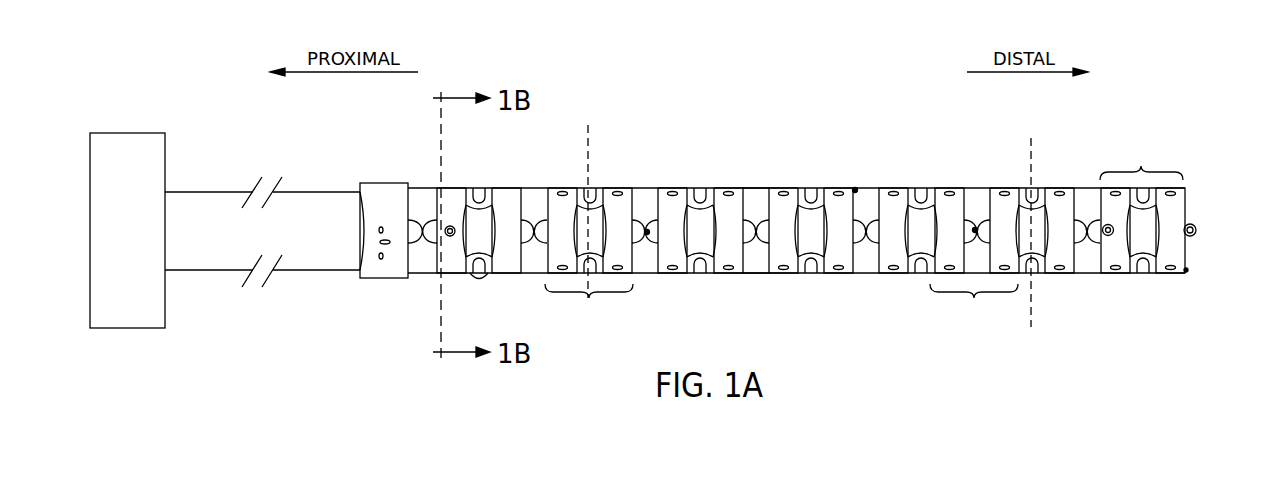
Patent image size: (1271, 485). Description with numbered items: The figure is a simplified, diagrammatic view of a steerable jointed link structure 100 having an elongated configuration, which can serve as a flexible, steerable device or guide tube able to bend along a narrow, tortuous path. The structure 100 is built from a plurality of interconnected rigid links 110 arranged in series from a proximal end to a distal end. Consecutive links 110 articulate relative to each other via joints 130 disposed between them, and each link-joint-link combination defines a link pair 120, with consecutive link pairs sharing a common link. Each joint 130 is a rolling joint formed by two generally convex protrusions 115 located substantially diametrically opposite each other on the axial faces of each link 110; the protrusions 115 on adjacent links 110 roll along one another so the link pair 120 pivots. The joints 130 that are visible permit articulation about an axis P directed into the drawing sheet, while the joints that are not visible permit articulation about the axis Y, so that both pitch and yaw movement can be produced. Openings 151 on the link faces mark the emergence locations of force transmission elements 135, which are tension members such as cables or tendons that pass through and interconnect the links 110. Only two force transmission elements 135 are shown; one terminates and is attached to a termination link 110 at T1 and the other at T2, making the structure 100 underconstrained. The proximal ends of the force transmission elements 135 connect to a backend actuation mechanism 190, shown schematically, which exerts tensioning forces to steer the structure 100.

The jointed link structure 100 is at (744, 99).
The rigid link 110 is at (500, 187).
The convex protrusion 115 is at (697, 185).
The link pair 120 is at (864, 233).
The joint 130 is at (478, 187).
The force transmission element 135 is at (298, 190).
The opening 151 is at (747, 187).
The backend actuation mechanism 190 is at (124, 133).
The axis P is at (647, 230).
The termination T1 is at (855, 188).
The termination T2 is at (1190, 268).
The axis Y is at (592, 142).